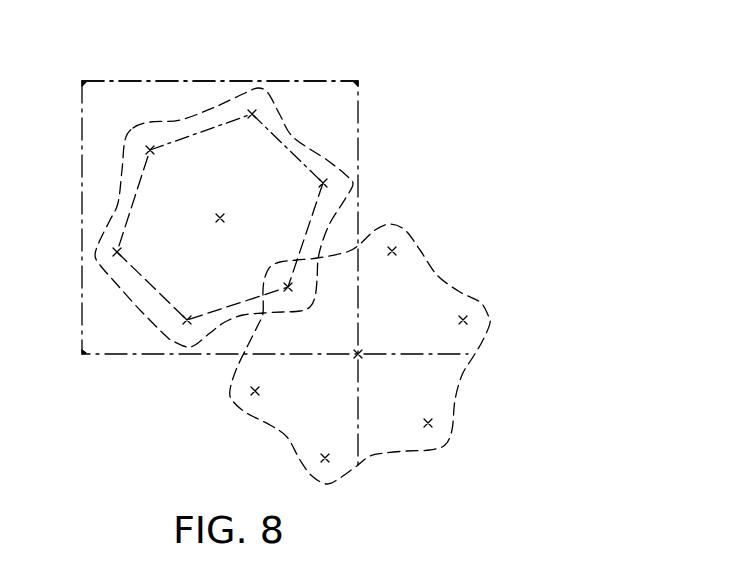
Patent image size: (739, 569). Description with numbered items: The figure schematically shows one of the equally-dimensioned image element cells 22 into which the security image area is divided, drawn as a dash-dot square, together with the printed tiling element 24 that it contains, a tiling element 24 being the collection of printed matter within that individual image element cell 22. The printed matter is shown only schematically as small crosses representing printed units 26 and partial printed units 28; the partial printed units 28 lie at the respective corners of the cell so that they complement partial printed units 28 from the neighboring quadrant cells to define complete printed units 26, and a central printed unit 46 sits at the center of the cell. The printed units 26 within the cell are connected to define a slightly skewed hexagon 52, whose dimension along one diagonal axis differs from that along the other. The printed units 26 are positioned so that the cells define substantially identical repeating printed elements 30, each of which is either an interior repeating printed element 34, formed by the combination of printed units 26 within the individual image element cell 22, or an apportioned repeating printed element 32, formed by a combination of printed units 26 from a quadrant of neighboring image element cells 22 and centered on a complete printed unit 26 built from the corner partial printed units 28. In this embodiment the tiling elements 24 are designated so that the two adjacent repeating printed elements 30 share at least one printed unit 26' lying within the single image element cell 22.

The image element cell 22 is at (358, 100).
The printed tiling element 24 is at (178, 84).
The partial printed unit 28 is at (82, 81).
The printed unit 26 is at (290, 286).
The shared printed unit 26' is at (306, 318).
The central printed unit 46 is at (218, 223).
The skewed hexagon 52 is at (210, 130).
The repeating printed element 30 is at (365, 286).
The interior repeating printed element 34 is at (352, 185).
The apportioned repeating printed element 32 is at (487, 323).